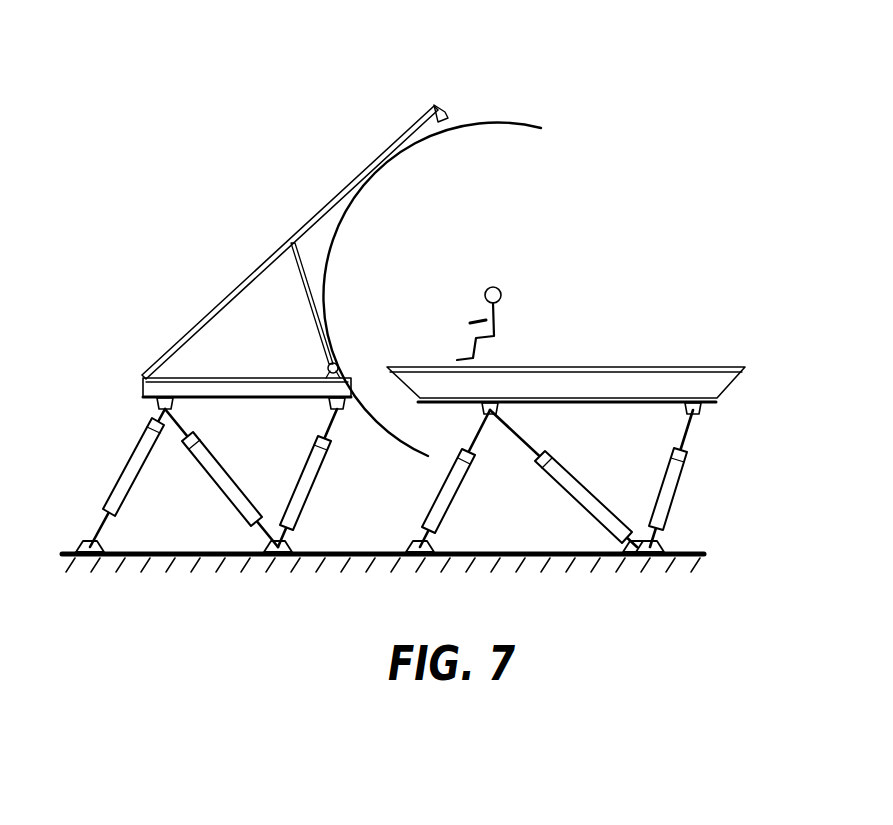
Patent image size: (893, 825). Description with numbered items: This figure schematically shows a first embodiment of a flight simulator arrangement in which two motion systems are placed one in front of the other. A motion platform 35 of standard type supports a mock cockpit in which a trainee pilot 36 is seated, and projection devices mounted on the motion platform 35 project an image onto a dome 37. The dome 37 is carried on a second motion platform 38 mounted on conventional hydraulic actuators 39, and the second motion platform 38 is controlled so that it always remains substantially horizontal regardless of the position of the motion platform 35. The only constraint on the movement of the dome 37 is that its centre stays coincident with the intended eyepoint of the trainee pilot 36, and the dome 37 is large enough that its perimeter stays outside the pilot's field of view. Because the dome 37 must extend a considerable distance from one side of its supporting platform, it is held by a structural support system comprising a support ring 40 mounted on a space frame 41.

The motion platform 35 is at (662, 383).
The trainee pilot 36 is at (498, 328).
The dome 37 is at (377, 175).
The second motion platform 38 is at (220, 380).
The hydraulic actuators 39 is at (132, 452).
The support ring 40 is at (427, 118).
The space frame 41 is at (258, 267).